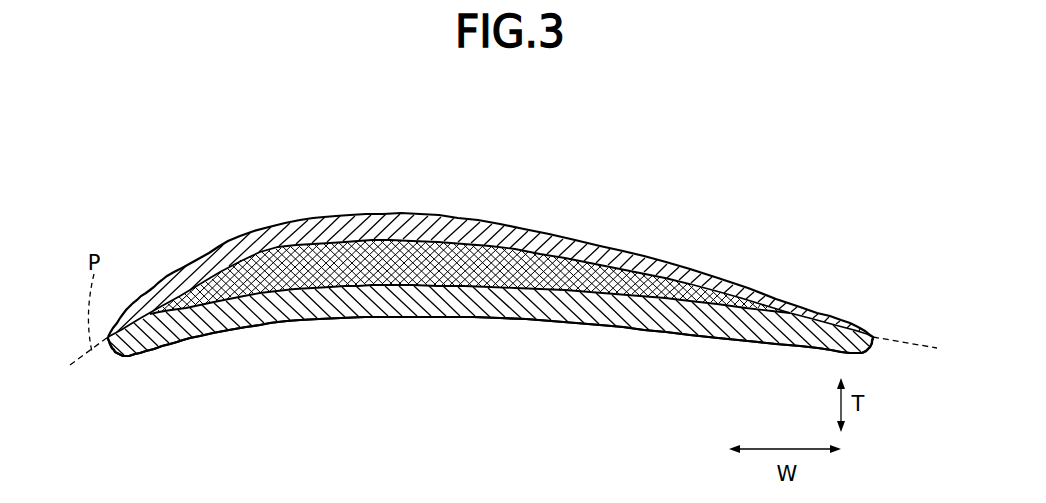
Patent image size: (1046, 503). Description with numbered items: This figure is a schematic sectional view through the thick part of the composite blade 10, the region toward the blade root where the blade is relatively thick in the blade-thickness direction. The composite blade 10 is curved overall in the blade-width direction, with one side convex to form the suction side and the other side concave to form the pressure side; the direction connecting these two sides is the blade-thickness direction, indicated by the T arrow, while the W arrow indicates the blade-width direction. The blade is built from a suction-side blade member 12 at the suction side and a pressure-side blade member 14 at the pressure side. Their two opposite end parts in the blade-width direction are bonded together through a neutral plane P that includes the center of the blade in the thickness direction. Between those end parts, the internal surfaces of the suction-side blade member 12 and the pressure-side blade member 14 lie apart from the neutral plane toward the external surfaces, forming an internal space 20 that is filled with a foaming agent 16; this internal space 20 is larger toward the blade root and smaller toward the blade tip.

The composite blade 10 is at (656, 176).
The suction-side blade member 12 is at (243, 227).
The pressure-side blade member 14 is at (251, 332).
The foaming agent 16 is at (307, 286).
The internal space 20 is at (433, 265).